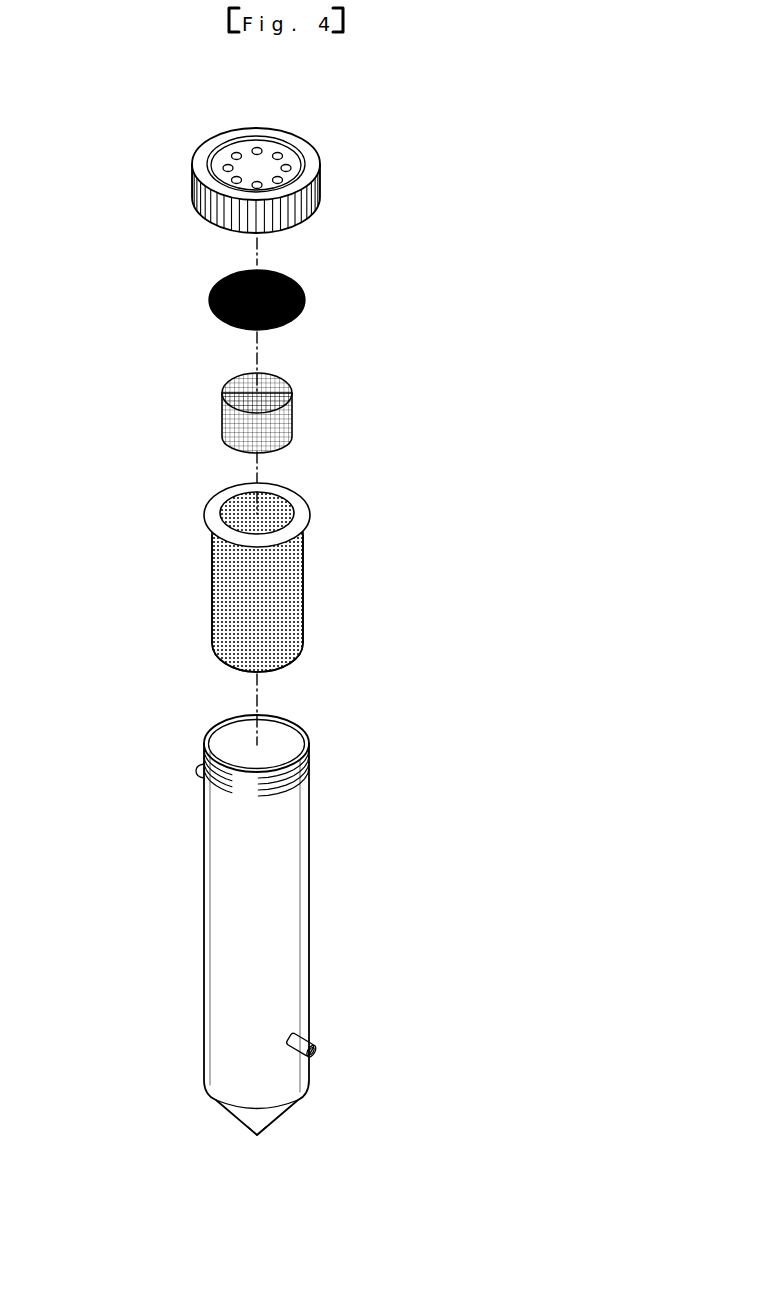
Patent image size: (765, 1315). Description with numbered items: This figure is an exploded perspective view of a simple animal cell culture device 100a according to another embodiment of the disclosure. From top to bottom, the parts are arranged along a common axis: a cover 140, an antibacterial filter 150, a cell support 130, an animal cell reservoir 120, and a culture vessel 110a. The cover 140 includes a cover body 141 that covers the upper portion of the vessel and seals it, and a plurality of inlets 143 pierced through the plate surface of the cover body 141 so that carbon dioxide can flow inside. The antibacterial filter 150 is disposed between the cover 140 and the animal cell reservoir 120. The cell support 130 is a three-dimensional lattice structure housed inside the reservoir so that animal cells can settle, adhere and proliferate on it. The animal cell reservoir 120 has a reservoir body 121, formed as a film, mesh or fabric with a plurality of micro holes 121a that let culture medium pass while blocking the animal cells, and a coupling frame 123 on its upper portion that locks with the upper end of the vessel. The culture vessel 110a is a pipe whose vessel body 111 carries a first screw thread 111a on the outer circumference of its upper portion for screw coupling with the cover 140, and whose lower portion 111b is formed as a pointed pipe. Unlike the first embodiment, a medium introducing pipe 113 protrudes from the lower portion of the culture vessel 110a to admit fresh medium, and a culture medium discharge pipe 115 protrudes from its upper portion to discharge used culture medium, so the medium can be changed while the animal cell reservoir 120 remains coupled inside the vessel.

The simple animal cell culture device 100a is at (420, 137).
The cover 140 is at (328, 214).
The cover body 141 is at (200, 167).
The inlets 143 is at (231, 157).
The antibacterial filter 150 is at (210, 300).
The cell support 130 is at (222, 423).
The animal cell reservoir 120 is at (110, 503).
The coupling frame 123 is at (222, 501).
The reservoir body 121 is at (213, 553).
The micro holes 121a is at (218, 590).
The culture vessel 110a is at (330, 987).
The vessel body 111 is at (306, 880).
The first screw thread 111a is at (311, 761).
The lower portion 111b is at (257, 1137).
The medium introducing pipe 113 is at (318, 1056).
The culture medium discharge pipe 115 is at (197, 771).